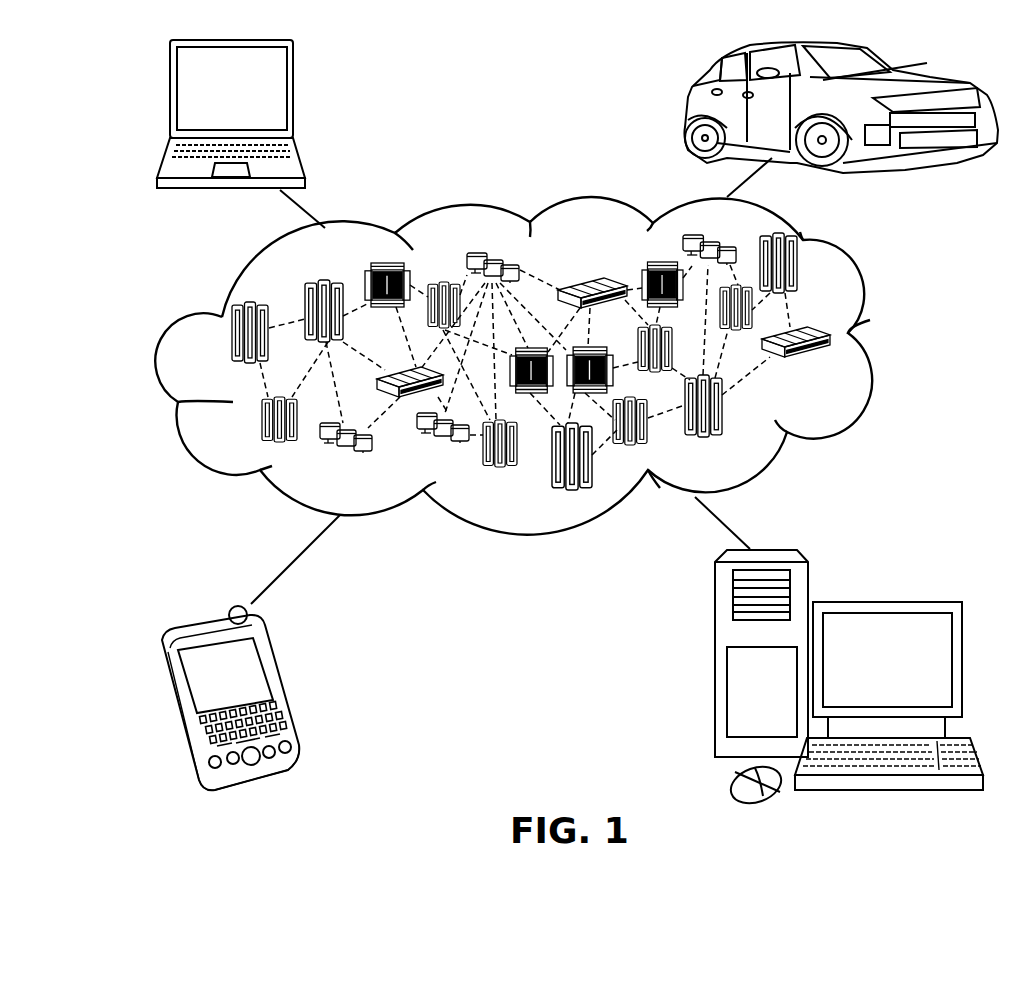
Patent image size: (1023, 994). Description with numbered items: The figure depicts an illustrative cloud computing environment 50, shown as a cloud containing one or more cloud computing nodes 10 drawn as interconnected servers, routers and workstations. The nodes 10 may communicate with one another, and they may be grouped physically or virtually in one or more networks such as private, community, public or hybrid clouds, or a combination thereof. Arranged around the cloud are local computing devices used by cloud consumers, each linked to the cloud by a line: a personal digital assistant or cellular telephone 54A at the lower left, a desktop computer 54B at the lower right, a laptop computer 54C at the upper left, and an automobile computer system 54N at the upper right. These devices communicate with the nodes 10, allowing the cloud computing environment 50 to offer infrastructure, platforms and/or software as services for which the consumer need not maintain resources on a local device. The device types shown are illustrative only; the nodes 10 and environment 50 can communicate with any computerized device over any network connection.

The cloud computing nodes 10 is at (578, 361).
The cloud computing environment 50 is at (885, 338).
The personal digital assistant (PDA) or cellular telephone 54A is at (283, 685).
The desktop computer 54B is at (887, 602).
The laptop computer 54C is at (293, 93).
The automobile computer system 54N is at (690, 108).